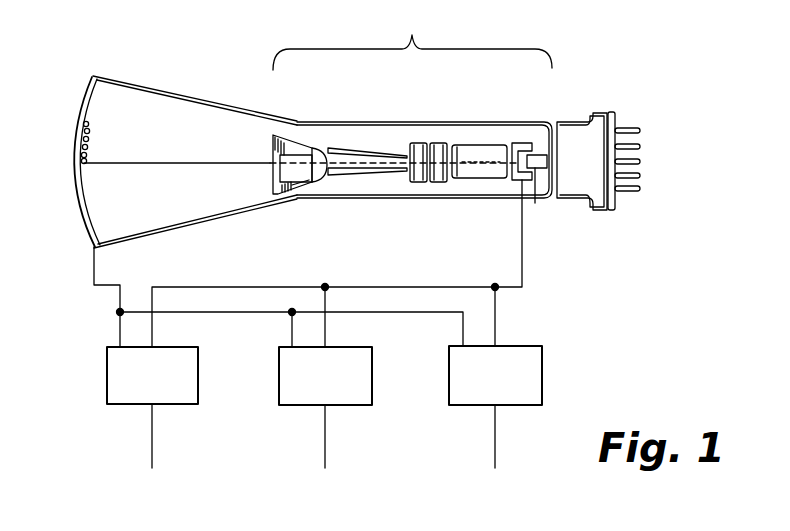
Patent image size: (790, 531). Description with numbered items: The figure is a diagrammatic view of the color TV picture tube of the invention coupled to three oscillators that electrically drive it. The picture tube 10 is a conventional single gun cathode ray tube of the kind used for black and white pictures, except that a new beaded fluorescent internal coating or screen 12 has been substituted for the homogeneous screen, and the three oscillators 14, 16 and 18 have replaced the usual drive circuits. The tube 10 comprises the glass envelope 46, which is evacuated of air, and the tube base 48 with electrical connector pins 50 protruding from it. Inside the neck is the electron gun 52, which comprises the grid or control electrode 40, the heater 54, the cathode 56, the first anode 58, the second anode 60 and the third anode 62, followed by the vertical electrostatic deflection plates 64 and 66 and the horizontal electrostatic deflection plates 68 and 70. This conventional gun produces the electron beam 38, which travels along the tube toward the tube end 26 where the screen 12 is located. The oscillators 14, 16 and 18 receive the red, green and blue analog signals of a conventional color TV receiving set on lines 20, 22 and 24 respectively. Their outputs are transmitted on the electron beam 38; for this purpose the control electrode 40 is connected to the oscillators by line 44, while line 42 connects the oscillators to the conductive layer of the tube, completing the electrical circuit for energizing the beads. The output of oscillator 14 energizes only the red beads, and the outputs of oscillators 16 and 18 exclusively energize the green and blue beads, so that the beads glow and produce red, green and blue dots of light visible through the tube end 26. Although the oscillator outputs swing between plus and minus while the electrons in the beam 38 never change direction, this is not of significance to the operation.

The picture tube 10 is at (258, 96).
The beaded fluorescent internal tube coating or screen 12 is at (88, 114).
The oscillator 14 is at (107, 376).
The oscillator 16 is at (279, 377).
The oscillator 18 is at (542, 375).
The line 20 is at (153, 430).
The line 22 is at (326, 430).
The line 24 is at (497, 430).
The tube end 26 is at (80, 218).
The electron beam 38 is at (180, 164).
The control electrode 40 is at (523, 143).
The line 42 is at (118, 298).
The line 44 is at (497, 316).
The glass envelope 46 is at (228, 220).
The tube base 48 is at (600, 118).
The electrical connector pins 50 is at (641, 188).
The electron gun 52 is at (412, 37).
The heater 54 is at (537, 170).
The cathode 56 is at (534, 186).
The first anode 58 is at (482, 146).
The second anode 60 is at (440, 143).
The third anode 62 is at (418, 143).
The vertical electrostatic deflection plate 64 is at (345, 173).
The vertical electrostatic deflection plate 66 is at (337, 152).
The horizontal electrostatic deflection plate 68 is at (295, 184).
The horizontal electrostatic deflection plate 70 is at (283, 140).